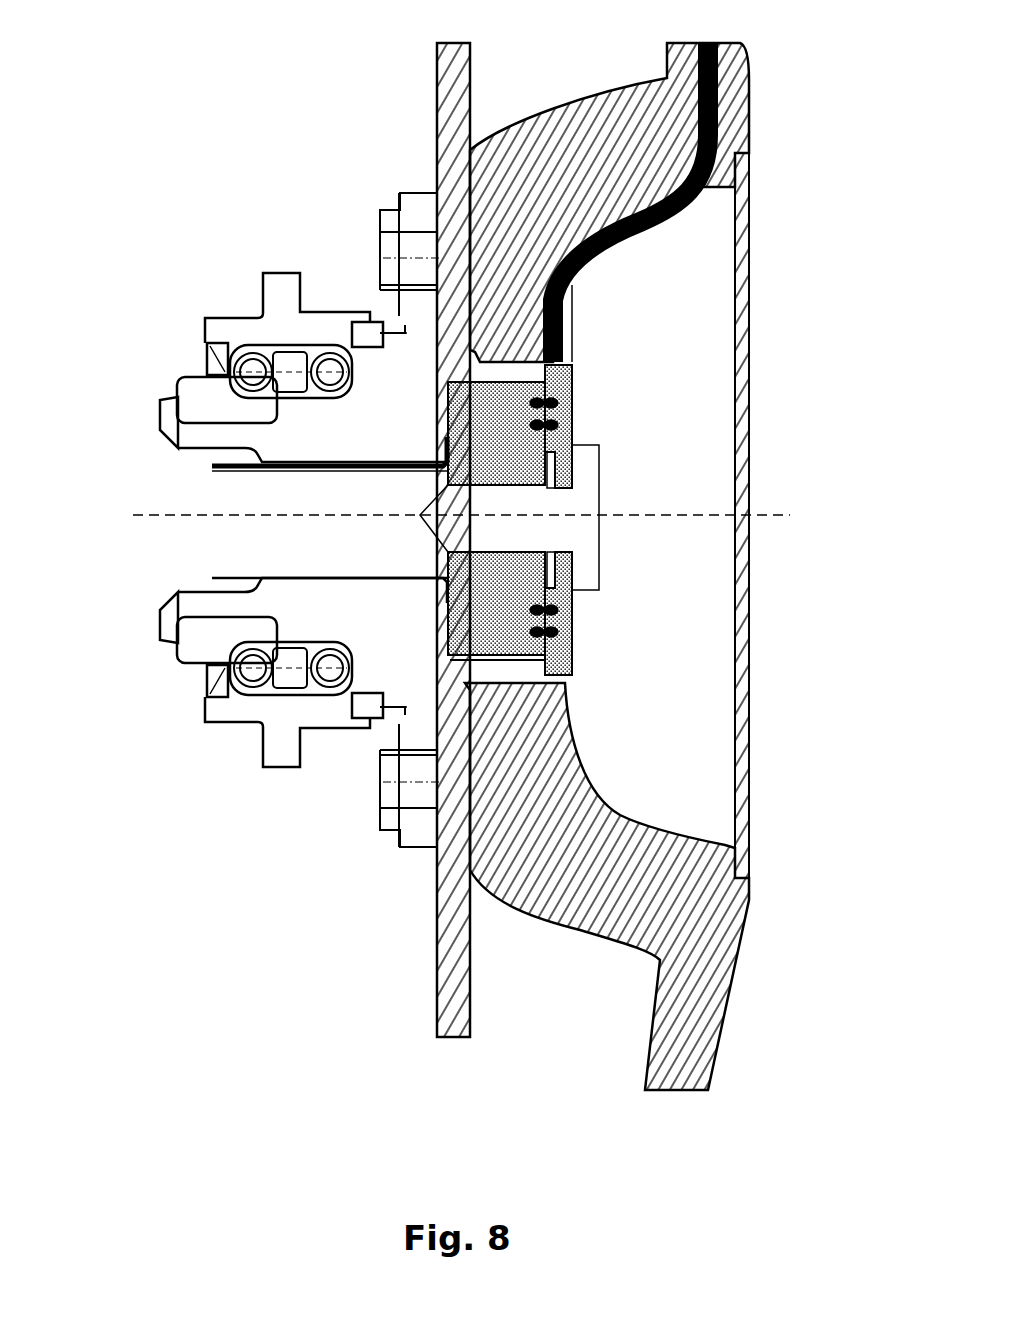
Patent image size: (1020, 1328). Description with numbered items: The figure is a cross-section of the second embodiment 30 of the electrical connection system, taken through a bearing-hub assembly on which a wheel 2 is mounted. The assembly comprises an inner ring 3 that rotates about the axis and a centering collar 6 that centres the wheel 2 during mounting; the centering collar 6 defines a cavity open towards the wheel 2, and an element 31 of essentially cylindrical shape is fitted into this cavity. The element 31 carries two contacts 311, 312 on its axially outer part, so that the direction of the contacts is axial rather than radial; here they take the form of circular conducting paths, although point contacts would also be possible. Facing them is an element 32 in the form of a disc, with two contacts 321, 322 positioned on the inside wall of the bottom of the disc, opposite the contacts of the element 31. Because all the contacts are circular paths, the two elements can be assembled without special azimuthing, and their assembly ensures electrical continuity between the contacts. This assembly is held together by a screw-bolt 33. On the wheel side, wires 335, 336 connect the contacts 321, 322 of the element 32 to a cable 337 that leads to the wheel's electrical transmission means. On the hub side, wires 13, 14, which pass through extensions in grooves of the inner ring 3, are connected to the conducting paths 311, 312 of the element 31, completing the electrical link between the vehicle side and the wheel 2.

The wheel 2 is at (627, 117).
The inner ring 3 is at (407, 408).
The centering collar 6 is at (510, 667).
The wire 13 is at (215, 468).
The wire 14 is at (215, 460).
The second embodiment of the system 30 is at (640, 448).
The element 31 is at (473, 625).
The contact 311 is at (533, 607).
The contact 312 is at (533, 633).
The element 32 is at (557, 650).
The contact 321 is at (556, 611).
The contact 322 is at (556, 635).
The screw-bolt 33 is at (578, 538).
The wire 335 is at (556, 422).
The wire 336 is at (556, 396).
The cable 337 is at (660, 238).